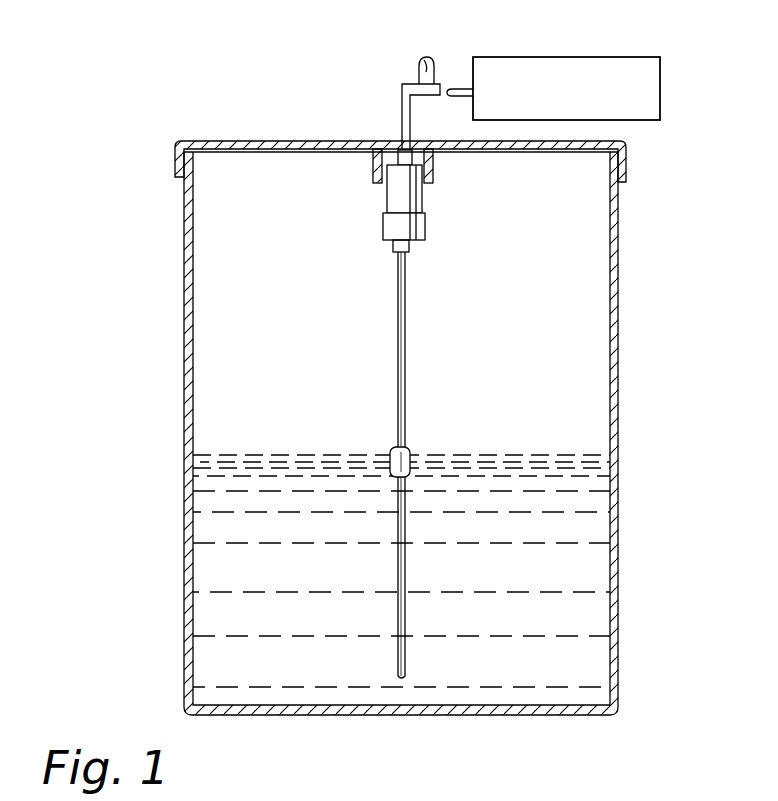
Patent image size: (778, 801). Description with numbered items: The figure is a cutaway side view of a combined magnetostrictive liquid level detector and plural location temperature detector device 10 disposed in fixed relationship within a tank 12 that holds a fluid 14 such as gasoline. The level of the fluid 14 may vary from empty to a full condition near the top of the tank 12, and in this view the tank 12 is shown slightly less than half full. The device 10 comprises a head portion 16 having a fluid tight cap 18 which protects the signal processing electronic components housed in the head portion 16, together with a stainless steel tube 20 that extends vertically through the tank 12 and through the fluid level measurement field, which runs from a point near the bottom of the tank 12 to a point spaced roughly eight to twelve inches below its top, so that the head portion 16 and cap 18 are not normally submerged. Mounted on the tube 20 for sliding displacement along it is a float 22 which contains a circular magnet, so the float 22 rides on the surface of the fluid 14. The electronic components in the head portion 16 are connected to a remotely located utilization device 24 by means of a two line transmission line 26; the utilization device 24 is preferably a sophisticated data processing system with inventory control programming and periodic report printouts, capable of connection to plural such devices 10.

The combined magnetostrictive liquid level detector and plural location temperature 10 is at (421, 413).
The tank 12 is at (620, 346).
The fluid 14 is at (401, 541).
The head portion 16 is at (383, 228).
The fluid tight cap 18 is at (425, 196).
The stainless steel tube 20 is at (405, 366).
The float 22 is at (412, 449).
The utilization device 24 is at (573, 58).
The two line transmission line 26 is at (417, 66).